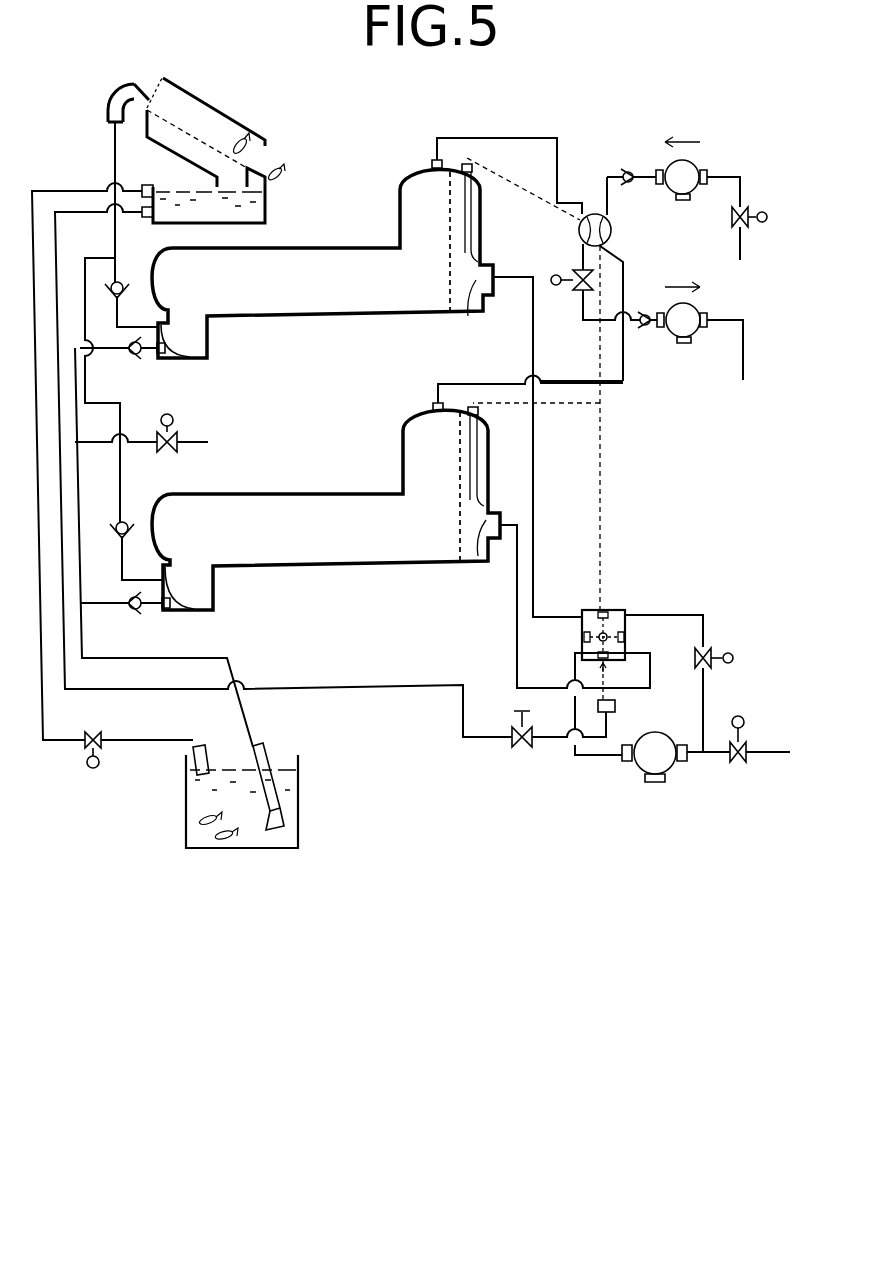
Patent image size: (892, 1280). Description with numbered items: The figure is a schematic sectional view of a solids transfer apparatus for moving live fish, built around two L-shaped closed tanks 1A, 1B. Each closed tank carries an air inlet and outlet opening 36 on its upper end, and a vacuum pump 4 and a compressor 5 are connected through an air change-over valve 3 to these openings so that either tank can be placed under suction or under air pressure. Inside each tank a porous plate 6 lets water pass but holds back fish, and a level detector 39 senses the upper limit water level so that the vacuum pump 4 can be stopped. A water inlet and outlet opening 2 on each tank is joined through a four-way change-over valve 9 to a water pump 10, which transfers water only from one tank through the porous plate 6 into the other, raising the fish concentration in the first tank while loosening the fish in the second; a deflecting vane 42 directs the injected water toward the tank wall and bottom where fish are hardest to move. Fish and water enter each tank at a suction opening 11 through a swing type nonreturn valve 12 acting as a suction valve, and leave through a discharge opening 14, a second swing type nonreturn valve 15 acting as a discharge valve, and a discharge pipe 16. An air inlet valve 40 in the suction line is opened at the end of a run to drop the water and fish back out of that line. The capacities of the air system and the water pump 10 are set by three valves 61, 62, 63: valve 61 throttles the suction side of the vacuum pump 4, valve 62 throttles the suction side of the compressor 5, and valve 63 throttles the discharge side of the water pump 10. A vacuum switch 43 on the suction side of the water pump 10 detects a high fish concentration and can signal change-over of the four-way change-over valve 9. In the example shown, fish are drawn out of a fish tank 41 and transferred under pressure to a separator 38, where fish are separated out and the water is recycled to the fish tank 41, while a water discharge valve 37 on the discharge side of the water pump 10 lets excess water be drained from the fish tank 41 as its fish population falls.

The closed tank 1A is at (300, 322).
The closed tank 1B is at (330, 453).
The water inlet and outlet opening 2 is at (494, 268).
The air change-over valve 3 is at (611, 230).
The vacuum pump 4 is at (690, 315).
The compressor 5 is at (695, 168).
The porous plate 6 is at (449, 270).
The four-way change-over valve 9 is at (610, 611).
The water pump 10 is at (647, 765).
The suction opening 11 is at (165, 354).
The swing type nonreturn valve 12 is at (136, 356).
The discharge opening 14 is at (176, 326).
The swing type nonreturn valve 15 is at (120, 278).
The discharge pipe 16 is at (113, 151).
The air inlet and outlet opening 36 is at (432, 162).
The water discharge valve 37 is at (735, 765).
The separator 38 is at (208, 103).
The level detector 39 is at (466, 160).
The air inlet valve 40 is at (176, 437).
The fish tank 41 is at (248, 850).
The deflecting vane 42 is at (470, 314).
The vacuum switch 43 is at (615, 705).
The valve 61 is at (575, 292).
The valve 62 is at (732, 216).
The valve 63 is at (708, 648).